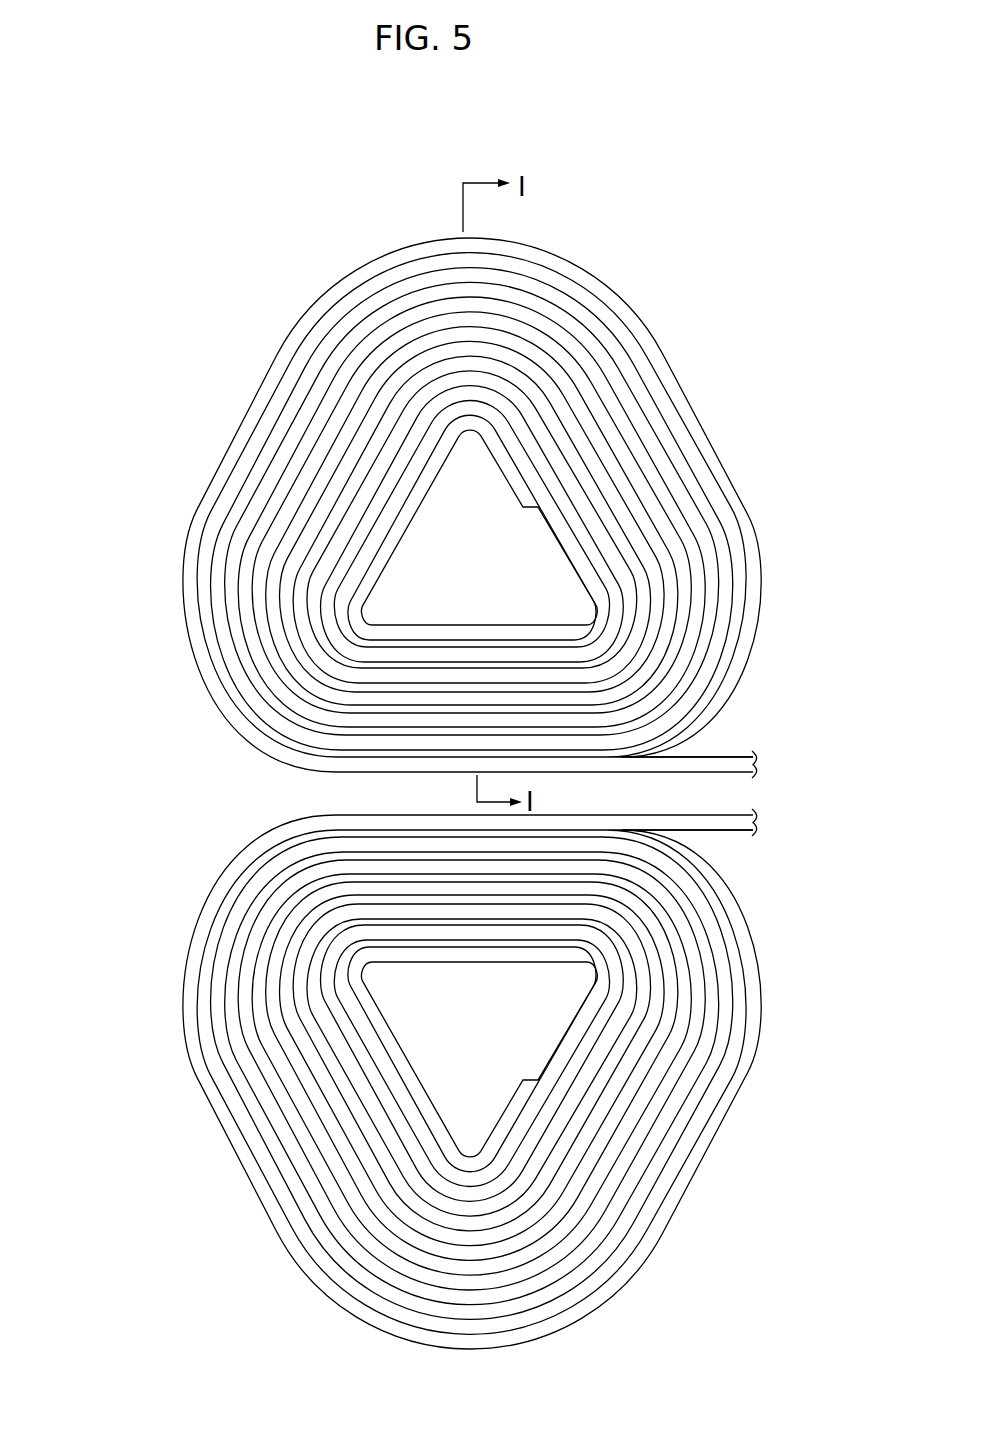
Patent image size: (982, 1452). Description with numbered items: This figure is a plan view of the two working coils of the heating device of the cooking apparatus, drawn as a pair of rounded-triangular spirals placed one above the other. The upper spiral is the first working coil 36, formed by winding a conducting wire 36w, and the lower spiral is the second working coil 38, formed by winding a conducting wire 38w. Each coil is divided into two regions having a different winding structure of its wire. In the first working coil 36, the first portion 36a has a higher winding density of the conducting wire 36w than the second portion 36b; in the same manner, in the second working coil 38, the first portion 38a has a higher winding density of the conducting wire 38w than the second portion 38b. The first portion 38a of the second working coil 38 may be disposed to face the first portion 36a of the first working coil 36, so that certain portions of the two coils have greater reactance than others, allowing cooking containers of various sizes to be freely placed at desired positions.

The first working coil 36 is at (203, 306).
The conducting wire 36w is at (225, 585).
The first portion 36a is at (335, 710).
The second portion 36b is at (692, 370).
The second working coil 38 is at (183, 1255).
The conducting wire 38w is at (255, 1048).
The first portion 38a is at (355, 912).
The second portion 38b is at (714, 1164).